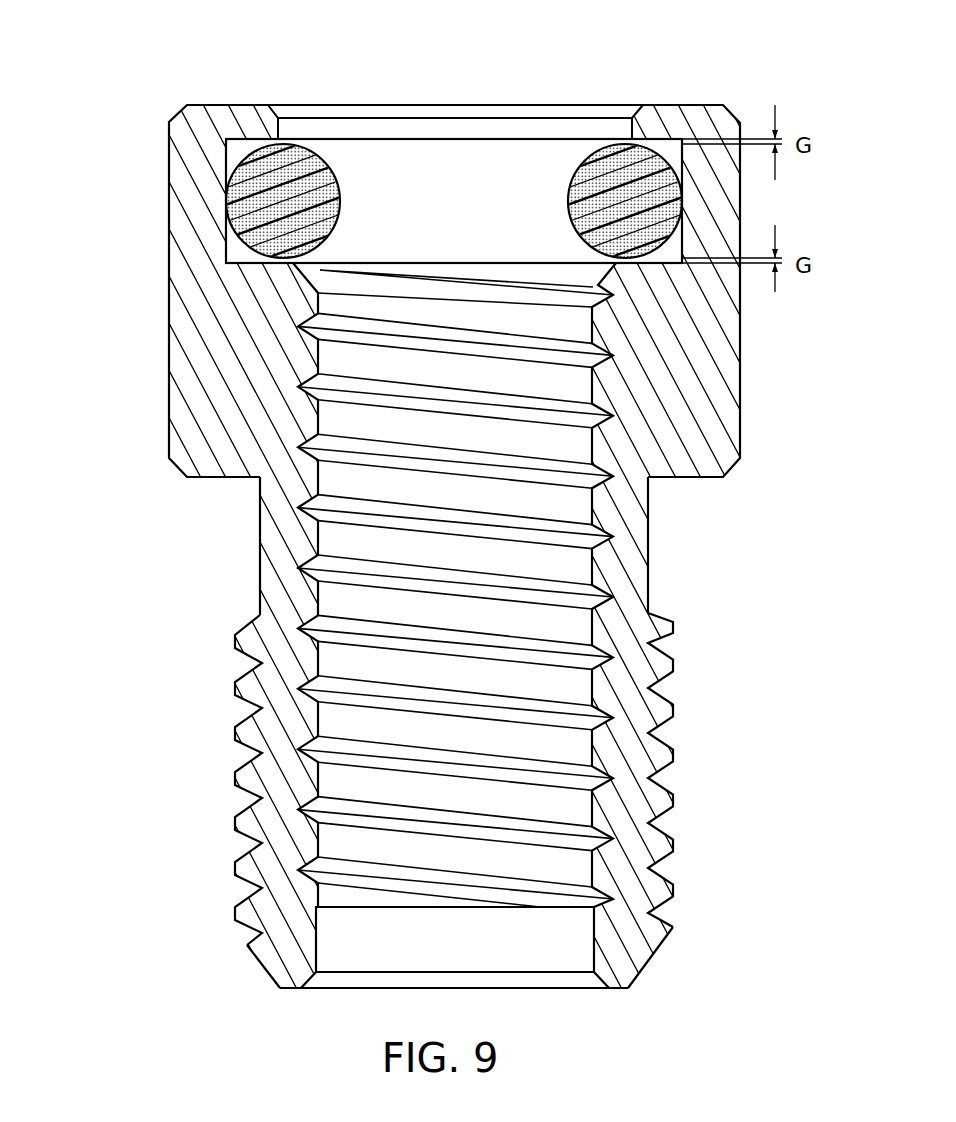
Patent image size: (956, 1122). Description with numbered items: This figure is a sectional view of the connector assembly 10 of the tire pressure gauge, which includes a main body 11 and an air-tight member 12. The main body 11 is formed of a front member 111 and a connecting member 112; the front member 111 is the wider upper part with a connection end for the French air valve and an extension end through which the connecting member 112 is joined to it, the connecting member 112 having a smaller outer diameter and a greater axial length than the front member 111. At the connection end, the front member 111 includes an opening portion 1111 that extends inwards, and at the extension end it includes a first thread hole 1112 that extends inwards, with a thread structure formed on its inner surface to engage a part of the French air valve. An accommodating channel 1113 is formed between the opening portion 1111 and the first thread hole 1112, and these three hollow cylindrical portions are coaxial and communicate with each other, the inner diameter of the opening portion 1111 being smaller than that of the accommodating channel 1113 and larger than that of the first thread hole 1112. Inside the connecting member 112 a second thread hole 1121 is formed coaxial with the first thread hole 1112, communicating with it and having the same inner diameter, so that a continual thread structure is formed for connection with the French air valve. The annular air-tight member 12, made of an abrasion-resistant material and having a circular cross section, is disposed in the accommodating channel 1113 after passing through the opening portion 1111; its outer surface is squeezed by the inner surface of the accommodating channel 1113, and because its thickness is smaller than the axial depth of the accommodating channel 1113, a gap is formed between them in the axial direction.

The connector assembly 10 is at (97, 36).
The main body 11 is at (86, 384).
The front member 111 is at (205, 400).
The connecting member 112 is at (288, 543).
The opening portion 1111 is at (463, 130).
The first thread hole 1112 is at (548, 383).
The accommodating channel 1113 is at (672, 152).
The second thread hole 1121 is at (540, 680).
The air-tight member 12 is at (228, 193).